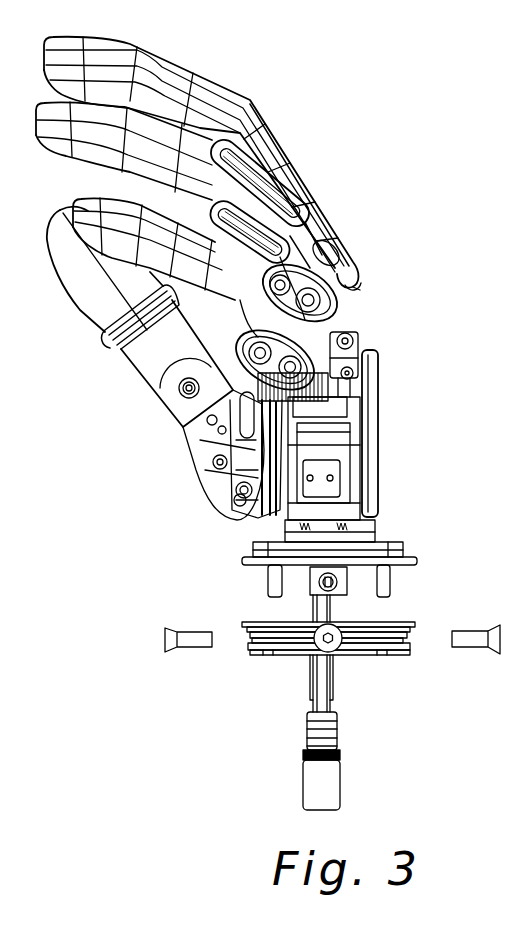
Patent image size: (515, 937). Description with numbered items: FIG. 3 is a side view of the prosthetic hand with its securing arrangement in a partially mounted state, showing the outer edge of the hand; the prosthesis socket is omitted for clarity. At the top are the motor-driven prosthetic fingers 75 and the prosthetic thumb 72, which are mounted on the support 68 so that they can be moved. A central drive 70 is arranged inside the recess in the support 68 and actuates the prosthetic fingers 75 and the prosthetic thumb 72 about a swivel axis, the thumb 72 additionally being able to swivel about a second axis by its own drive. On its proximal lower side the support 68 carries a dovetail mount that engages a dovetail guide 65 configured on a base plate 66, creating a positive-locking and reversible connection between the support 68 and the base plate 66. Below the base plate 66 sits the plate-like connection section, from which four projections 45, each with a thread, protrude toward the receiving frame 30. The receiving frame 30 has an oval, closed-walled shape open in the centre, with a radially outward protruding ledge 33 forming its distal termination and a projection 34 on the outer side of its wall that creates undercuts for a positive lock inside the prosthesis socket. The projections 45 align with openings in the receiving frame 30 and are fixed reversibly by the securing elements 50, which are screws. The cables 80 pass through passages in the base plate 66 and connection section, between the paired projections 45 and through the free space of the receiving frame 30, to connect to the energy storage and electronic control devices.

The prosthetic fingers 75 is at (288, 149).
The prosthetic thumb 72 is at (143, 357).
The support 68 is at (343, 400).
The central drive 70 is at (379, 403).
The dovetail guide 65 is at (377, 532).
The base plate 66 is at (400, 542).
The projections 45 is at (266, 591).
The receiving frame 30 is at (235, 680).
The ledge 33 is at (410, 627).
The projection 34 is at (417, 633).
The securing elements 50 is at (163, 630).
The cables 80 is at (313, 688).